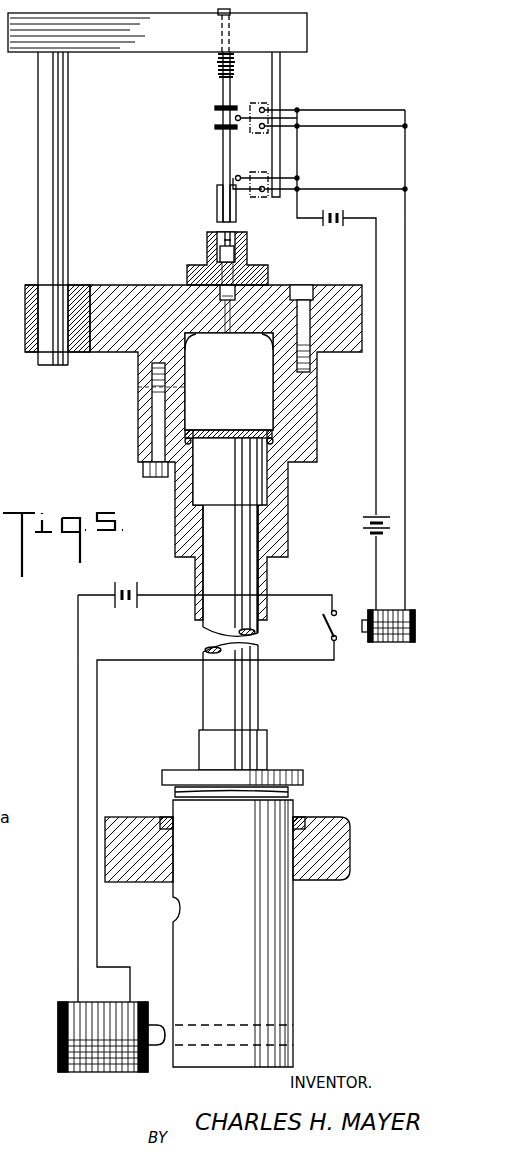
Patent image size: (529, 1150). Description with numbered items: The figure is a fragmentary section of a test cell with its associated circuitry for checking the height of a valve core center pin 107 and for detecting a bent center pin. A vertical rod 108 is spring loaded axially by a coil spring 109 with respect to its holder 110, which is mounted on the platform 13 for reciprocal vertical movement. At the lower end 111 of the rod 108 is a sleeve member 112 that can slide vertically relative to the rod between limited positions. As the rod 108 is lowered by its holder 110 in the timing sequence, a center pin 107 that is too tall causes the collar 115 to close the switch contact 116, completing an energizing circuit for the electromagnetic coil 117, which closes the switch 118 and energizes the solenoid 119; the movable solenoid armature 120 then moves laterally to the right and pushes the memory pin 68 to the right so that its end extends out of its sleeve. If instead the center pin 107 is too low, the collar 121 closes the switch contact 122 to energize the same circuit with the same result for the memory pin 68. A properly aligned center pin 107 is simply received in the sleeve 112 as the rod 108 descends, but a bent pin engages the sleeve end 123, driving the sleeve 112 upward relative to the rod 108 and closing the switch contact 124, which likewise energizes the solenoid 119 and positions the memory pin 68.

The platform 13 is at (79, 353).
The memory pin 68 is at (290, 1032).
The valve core center pin 107 is at (222, 232).
The vertical rod 108 is at (222, 97).
The coil spring 109 is at (218, 63).
The holder 110 is at (97, 46).
The lower end of rod 111 is at (217, 196).
The sleeve member 112 is at (217, 206).
The collar 115 is at (216, 129).
The switch contact 116 is at (246, 136).
The electromagnetic coil 117 is at (393, 643).
The switch 118 is at (324, 625).
The solenoid 119 is at (112, 1072).
The movable solenoid armature 120 is at (160, 1047).
The collar 121 is at (215, 110).
The switch contact 122 is at (241, 106).
The sleeve end 123 is at (235, 222).
The switch contact 124 is at (236, 180).